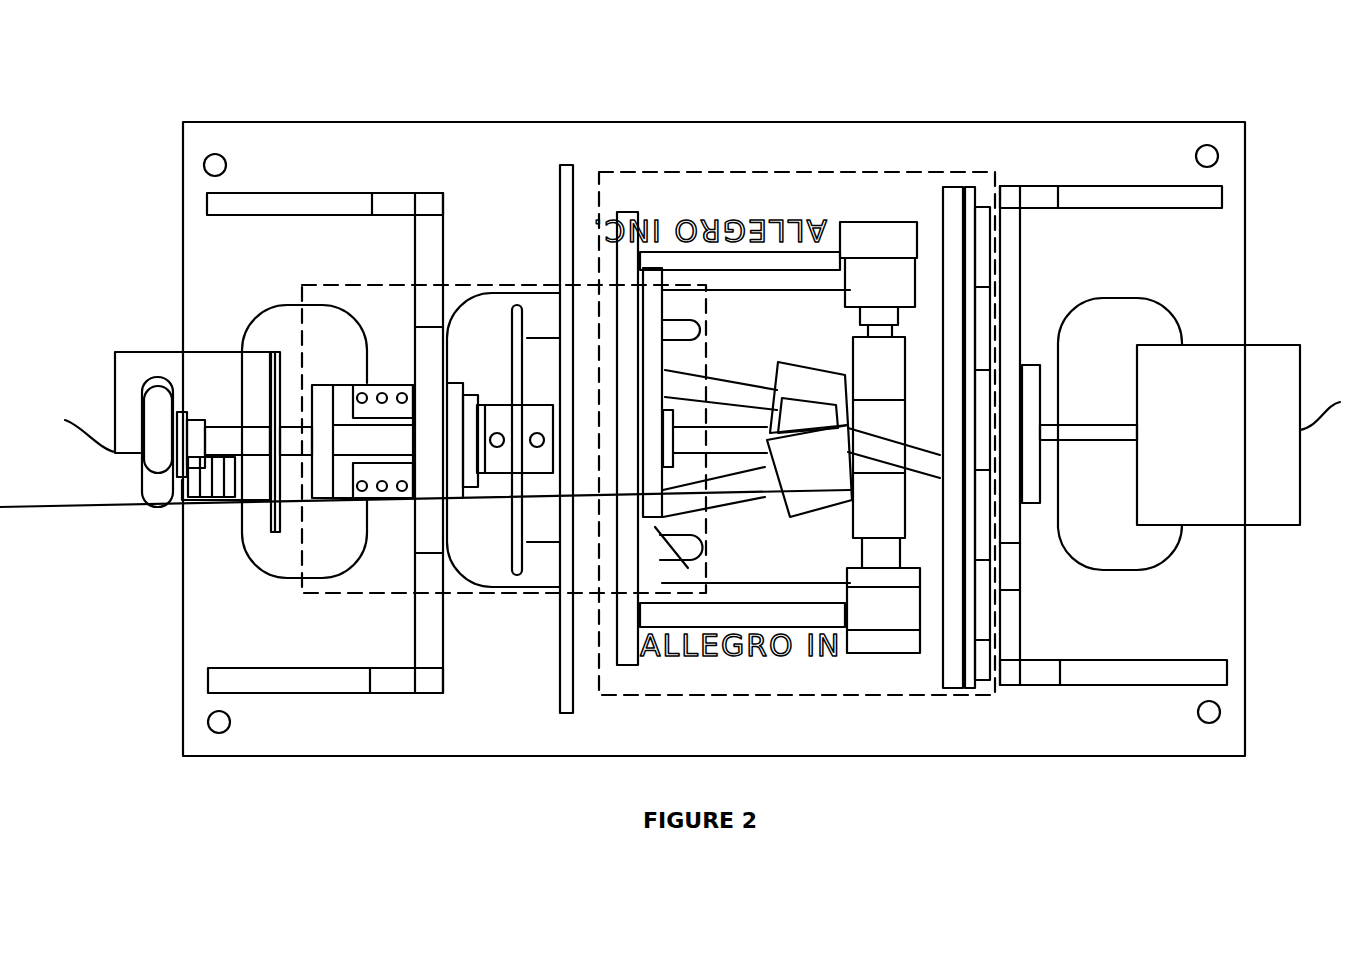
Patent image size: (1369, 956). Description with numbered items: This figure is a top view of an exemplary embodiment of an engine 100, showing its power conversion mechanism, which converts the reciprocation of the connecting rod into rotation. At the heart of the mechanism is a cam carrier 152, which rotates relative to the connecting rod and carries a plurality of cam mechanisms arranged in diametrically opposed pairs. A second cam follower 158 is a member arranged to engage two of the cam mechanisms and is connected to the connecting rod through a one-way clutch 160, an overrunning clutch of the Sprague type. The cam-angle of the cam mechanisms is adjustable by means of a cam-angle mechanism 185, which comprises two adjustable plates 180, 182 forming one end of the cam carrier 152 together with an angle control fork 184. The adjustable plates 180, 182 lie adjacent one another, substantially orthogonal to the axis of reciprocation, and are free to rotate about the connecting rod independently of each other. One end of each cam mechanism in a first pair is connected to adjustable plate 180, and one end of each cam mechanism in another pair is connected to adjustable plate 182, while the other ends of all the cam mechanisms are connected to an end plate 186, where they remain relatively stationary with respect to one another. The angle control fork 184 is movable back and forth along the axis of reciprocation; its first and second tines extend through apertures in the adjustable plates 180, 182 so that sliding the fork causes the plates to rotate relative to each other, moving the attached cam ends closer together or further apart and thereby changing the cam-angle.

The engine 100 is at (810, 90).
The cam carrier 152 is at (780, 697).
The second cam follower 158 is at (870, 365).
The one-way clutch 160 is at (907, 430).
The adjustable plate 180 is at (627, 573).
The adjustable plate 182 is at (657, 527).
The angle control fork 184 is at (580, 322).
The cam-angle mechanism 185 is at (350, 285).
The end plate 186 is at (943, 672).